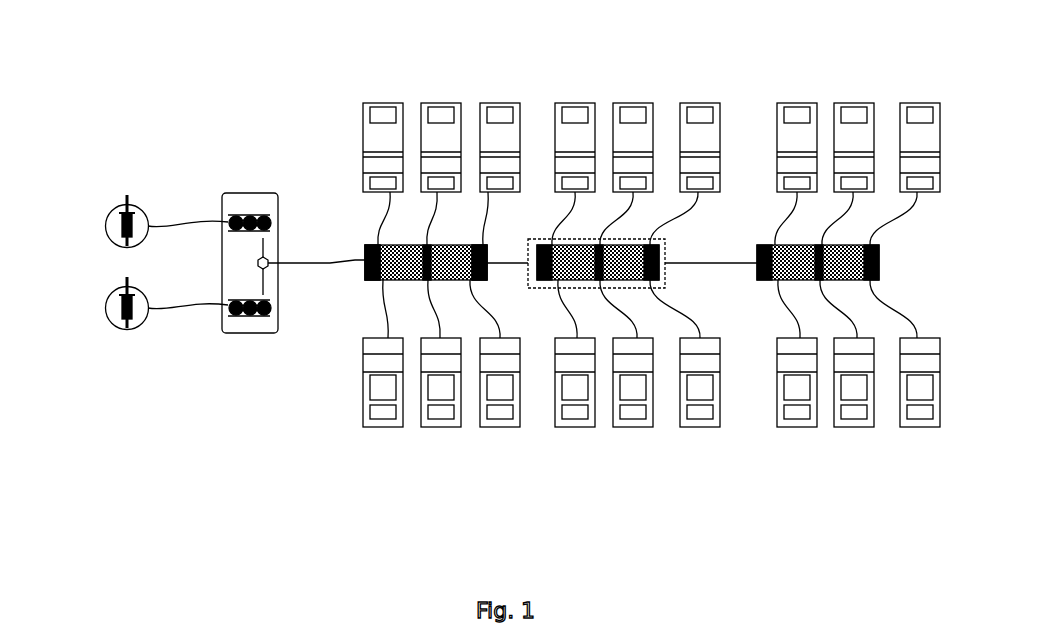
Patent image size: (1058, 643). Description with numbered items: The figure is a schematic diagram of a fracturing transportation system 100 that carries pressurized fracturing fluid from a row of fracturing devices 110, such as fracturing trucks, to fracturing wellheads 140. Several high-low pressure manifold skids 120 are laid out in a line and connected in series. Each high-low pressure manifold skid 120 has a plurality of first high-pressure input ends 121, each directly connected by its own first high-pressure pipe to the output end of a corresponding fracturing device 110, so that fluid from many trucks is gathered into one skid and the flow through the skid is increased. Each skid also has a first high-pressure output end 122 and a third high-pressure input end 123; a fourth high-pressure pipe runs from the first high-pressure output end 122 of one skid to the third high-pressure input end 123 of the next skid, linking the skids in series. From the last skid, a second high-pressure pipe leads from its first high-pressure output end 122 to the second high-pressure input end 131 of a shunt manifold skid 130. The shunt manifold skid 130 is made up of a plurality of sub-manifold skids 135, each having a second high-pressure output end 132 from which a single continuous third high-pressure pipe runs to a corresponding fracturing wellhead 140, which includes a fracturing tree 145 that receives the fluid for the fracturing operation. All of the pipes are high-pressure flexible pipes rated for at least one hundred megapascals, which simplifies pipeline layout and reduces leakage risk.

The fracturing transportation system 100 is at (516, 549).
The fracturing device 110 is at (698, 122).
The high-low pressure manifold skid 120 is at (590, 289).
The first high-pressure input end 121 is at (381, 282).
The first high-pressure output end 122 is at (365, 247).
The third high-pressure input end 123 is at (485, 282).
The shunt manifold skid 130 is at (261, 276).
The second high-pressure input end 131 is at (278, 207).
The second high-pressure output end 132 is at (232, 197).
The sub-manifold skid 135 is at (243, 334).
The fracturing wellhead 140 is at (131, 330).
The fracturing tree 145 is at (119, 330).